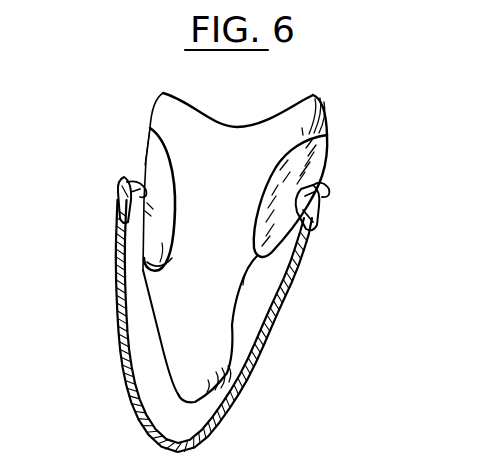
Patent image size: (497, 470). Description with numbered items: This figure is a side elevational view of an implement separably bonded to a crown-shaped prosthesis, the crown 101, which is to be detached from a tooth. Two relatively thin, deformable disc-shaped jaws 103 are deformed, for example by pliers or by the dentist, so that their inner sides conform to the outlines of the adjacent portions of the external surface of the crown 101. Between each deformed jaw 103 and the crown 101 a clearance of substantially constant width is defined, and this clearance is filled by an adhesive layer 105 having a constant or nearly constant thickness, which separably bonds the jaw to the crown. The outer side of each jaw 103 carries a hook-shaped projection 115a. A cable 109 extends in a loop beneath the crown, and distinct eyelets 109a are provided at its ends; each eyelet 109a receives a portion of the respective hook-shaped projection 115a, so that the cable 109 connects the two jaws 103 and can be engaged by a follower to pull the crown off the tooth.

The crown 101 is at (207, 305).
The disc-shaped jaw 103 is at (153, 162).
The adhesive layer 105 is at (168, 272).
The cable 109 is at (243, 381).
The eyelet 109a is at (118, 204).
The hook-shaped projection 115a is at (326, 190).